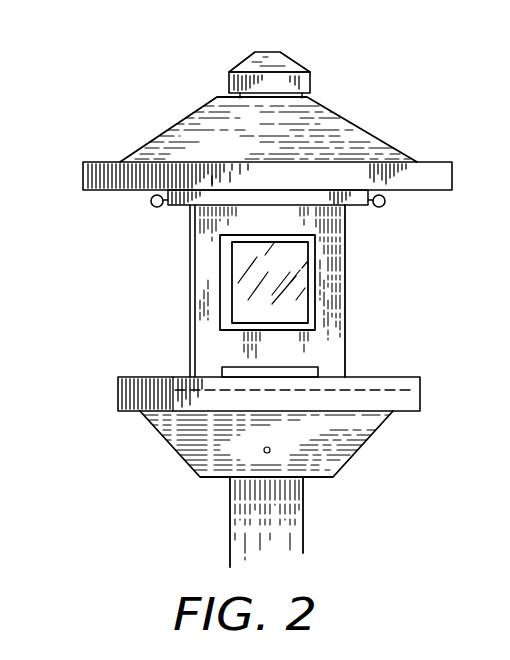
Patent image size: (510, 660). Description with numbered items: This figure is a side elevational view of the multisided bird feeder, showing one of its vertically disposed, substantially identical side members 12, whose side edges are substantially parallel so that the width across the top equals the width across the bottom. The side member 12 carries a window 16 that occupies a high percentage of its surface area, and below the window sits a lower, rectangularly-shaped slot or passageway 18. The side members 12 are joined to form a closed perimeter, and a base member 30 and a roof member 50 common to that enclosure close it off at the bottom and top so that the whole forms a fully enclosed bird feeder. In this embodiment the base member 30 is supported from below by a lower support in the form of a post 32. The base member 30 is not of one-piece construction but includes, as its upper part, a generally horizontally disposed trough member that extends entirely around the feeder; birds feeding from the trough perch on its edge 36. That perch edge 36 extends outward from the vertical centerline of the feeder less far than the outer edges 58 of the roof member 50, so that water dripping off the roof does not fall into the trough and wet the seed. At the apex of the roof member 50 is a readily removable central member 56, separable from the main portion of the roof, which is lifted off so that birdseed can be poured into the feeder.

The side member 12 is at (337, 268).
The window 16 is at (240, 268).
The lower rectangularly-shaped slot or passageway 18 is at (295, 365).
The base member 30 is at (188, 445).
The post 32 is at (285, 527).
The edge 36 is at (118, 397).
The roof member 50 is at (333, 125).
The central member 56 is at (290, 65).
The outer edges 58 is at (95, 163).